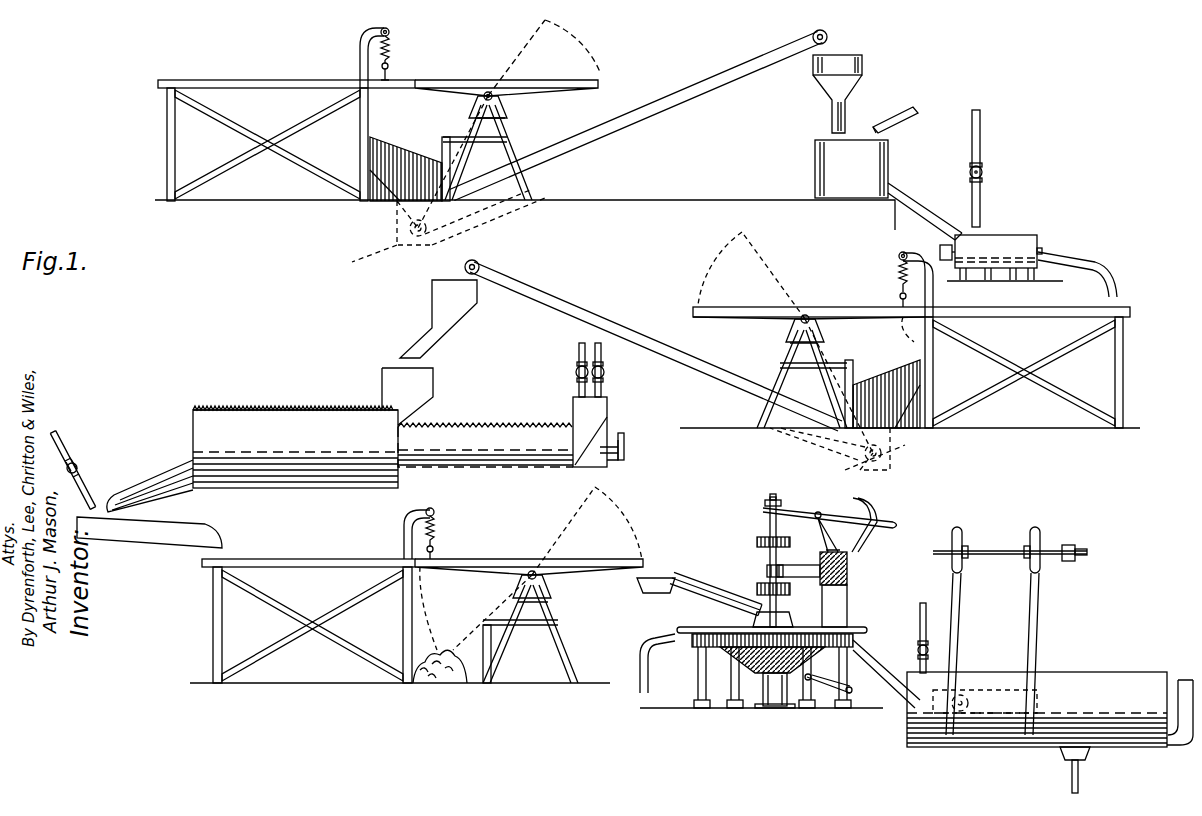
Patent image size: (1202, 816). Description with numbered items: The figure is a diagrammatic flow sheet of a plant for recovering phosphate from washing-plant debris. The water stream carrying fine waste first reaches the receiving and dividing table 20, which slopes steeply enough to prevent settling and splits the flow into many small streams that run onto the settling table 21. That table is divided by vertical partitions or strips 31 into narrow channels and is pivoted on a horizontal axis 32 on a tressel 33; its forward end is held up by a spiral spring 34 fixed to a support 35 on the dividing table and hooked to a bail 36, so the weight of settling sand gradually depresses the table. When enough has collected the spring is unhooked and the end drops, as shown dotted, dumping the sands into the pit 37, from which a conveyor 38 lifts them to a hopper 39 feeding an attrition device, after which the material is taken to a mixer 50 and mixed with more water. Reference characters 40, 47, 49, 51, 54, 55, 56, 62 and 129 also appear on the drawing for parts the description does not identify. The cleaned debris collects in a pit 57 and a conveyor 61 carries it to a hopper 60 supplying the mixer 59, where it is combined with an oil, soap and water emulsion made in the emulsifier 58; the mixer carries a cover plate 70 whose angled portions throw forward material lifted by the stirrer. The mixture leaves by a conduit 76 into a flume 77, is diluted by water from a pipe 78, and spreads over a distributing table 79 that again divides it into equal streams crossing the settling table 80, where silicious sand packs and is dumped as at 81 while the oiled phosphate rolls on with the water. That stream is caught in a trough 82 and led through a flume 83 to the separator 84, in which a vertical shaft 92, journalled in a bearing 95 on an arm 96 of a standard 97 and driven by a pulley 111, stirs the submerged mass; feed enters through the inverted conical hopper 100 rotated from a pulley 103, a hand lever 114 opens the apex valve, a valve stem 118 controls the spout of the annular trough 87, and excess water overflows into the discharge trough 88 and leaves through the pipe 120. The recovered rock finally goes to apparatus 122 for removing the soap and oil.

The receiving and dividing table 20 is at (195, 80).
The settling table 21 is at (422, 90).
The vertical partitions or strips 31 is at (550, 88).
The horizontal axis 32 is at (484, 93).
The support or tressel 33 is at (515, 152).
The spiral spring 34 is at (390, 45).
The support 35 is at (362, 46).
The bail 36 is at (392, 70).
The pit 37 is at (428, 189).
The conveyor 38 is at (645, 104).
The hopper 39 is at (862, 64).
The cylinder 40 is at (825, 172).
The spout 47 is at (900, 114).
The chute 49 is at (910, 193).
The mixer 50 is at (1002, 240).
The pipe with valve 51 is at (980, 144).
The chute 54 is at (1078, 265).
The table 55 is at (1035, 310).
The bent standard 56 is at (867, 307).
The pit 57 is at (822, 351).
The emulsifier 58 is at (485, 452).
The mixer 59 is at (305, 430).
The hopper 60 is at (432, 306).
The conveyor 61 is at (552, 300).
The trough 62 is at (485, 427).
The cover plate 70 is at (275, 410).
The conduit 76 is at (163, 480).
The flume 77 is at (143, 532).
The pipe 78 is at (82, 478).
The distributing table 79 is at (272, 559).
The settling table 80 is at (483, 560).
The dumped silicious material 81 is at (440, 650).
The trough 82 is at (657, 580).
The flume 83 is at (690, 590).
The separator 84 is at (760, 660).
The annular trough 87 is at (858, 636).
The annular discharge trough 88 is at (860, 630).
The vertical shaft 92 is at (760, 545).
The bearing 95 is at (764, 571).
The arm 96 is at (795, 565).
The standard or support 97 is at (850, 560).
The inverted conical hopper 100 is at (800, 608).
The pulley 103 is at (748, 600).
The pulley 111 is at (767, 504).
The hand lever 114 is at (802, 512).
The valve stem 118 is at (1056, 548).
The pipe 120 is at (640, 644).
The apparatus for removing soap and oil 122 is at (1085, 680).
The pipe with valve 129 is at (926, 624).